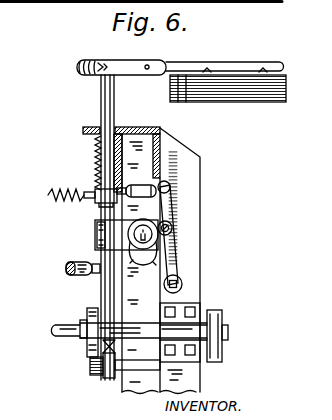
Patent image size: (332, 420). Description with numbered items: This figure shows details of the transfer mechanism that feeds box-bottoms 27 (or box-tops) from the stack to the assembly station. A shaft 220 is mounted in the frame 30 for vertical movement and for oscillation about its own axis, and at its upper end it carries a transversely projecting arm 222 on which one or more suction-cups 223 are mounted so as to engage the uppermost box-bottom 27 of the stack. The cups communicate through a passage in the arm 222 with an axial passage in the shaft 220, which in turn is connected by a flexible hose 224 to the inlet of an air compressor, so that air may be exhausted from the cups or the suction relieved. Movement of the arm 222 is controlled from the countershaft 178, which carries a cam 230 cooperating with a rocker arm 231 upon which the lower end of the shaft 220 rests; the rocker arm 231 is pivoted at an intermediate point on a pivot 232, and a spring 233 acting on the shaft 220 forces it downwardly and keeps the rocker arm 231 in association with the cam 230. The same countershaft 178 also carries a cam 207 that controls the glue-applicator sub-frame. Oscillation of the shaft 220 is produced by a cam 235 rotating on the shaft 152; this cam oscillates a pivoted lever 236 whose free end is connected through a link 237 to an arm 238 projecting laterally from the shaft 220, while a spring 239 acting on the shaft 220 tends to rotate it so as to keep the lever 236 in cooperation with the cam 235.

The transversely projecting arm 222 is at (136, 60).
The suction-cups 223 is at (264, 70).
The box-bottoms 27 is at (268, 95).
The shaft 220 is at (100, 107).
The frame 30 is at (166, 153).
The spring 233 is at (98, 162).
The link 237 is at (143, 184).
The arm 238 is at (98, 203).
The spring 239 is at (51, 205).
The pivoted lever 236 is at (166, 190).
The shaft 152 is at (172, 210).
The cam 235 is at (158, 256).
The flexible hose 224 is at (66, 268).
The countershaft 178 is at (65, 323).
The cam 230 is at (88, 341).
The rocker arm 231 is at (103, 381).
The pivot 232 is at (140, 367).
The cam 207 is at (222, 316).